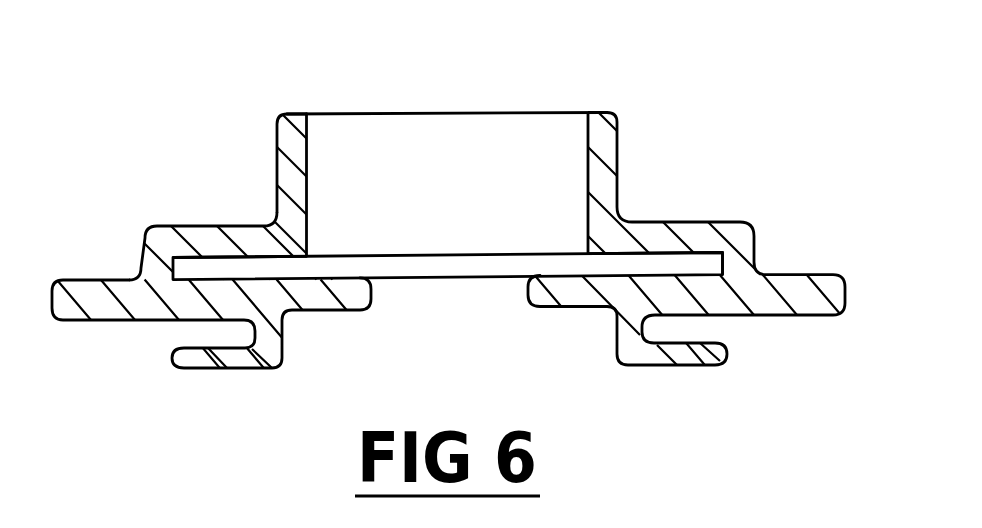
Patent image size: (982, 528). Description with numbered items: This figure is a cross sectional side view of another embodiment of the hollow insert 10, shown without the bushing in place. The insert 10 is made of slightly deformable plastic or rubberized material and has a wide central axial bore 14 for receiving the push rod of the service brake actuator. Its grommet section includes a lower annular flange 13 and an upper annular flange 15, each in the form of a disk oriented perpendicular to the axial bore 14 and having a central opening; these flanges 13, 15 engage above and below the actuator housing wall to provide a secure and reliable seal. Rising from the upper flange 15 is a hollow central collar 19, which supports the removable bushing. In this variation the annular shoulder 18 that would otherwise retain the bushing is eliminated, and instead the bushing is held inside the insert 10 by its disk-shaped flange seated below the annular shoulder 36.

The hollow insert 10 is at (248, 90).
The central axial bore 14 is at (498, 133).
The annular shoulder 18 is at (604, 114).
The hollow central collar 19 is at (603, 193).
The upper annular flange 15 is at (798, 290).
The annular shoulder 36 is at (163, 238).
The lower annular flange 13 is at (687, 351).